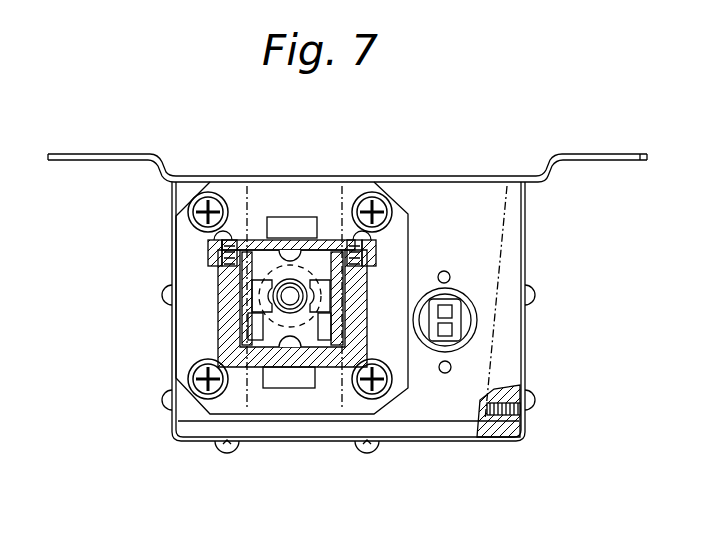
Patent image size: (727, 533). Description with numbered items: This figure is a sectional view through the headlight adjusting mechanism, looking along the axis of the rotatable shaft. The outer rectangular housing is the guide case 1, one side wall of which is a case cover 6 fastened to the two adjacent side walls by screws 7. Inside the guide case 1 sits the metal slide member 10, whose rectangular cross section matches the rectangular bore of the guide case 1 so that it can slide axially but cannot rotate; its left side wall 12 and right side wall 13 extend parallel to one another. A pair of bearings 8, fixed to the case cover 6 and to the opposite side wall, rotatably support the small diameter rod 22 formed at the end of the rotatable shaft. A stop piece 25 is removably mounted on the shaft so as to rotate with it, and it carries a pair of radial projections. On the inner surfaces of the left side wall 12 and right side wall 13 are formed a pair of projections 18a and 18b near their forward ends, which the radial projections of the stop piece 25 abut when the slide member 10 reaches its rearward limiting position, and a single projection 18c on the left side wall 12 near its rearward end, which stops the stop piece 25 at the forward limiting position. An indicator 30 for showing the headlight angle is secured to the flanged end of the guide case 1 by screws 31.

The guide case 1 is at (236, 280).
The case cover 6 is at (246, 250).
The screws 7 is at (238, 238).
The bearings 8 is at (282, 248).
The slide member 10 is at (193, 271).
The left side wall 12 is at (338, 300).
The right side wall 13 is at (200, 362).
The projection 18a is at (330, 250).
The projection 18b is at (254, 340).
The projection 18c is at (331, 328).
The small diameter rod 22 is at (324, 340).
The stop piece 25 is at (228, 302).
The indicator 30 is at (532, 238).
The screws 31 is at (383, 206).